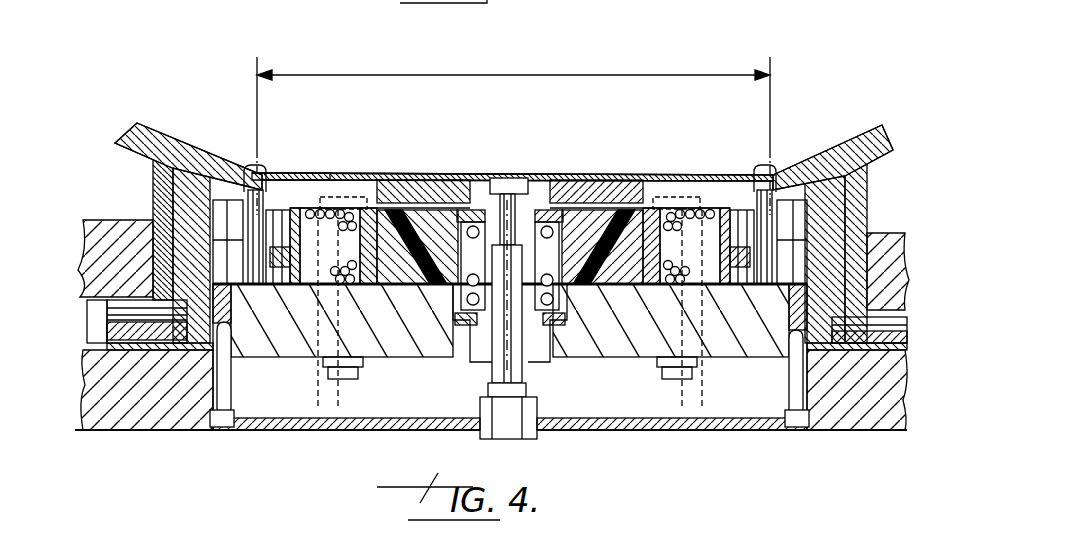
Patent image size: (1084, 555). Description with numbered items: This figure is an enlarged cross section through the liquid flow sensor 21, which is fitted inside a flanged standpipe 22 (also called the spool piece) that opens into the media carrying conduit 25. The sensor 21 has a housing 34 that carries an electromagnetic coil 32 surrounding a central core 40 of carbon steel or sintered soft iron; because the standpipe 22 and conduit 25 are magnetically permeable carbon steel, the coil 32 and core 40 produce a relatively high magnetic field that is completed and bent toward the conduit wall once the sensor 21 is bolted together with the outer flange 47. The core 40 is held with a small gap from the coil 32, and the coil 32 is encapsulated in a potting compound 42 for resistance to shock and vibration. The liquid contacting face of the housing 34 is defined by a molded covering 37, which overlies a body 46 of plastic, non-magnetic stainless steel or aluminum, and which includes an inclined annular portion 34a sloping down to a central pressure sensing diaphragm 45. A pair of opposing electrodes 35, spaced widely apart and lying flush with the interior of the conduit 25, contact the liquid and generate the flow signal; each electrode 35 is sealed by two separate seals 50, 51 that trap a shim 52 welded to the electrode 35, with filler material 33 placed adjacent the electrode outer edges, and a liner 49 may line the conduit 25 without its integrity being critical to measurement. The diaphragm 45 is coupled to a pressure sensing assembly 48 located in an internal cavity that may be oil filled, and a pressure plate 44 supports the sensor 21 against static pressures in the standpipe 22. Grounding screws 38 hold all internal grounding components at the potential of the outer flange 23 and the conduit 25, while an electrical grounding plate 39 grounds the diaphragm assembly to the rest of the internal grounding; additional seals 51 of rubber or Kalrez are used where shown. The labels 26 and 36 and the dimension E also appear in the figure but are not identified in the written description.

The liquid flow sensor 21 is at (748, 50).
The flanged standpipe 22 is at (152, 185).
The outer flange 23 is at (483, 323).
The conduit 25 is at (147, 150).
The bearing post 26 is at (728, 205).
The electromagnetic coil 32 is at (668, 182).
The filler material 33 is at (190, 147).
The housing 34 is at (652, 163).
The annular portion 34a is at (312, 172).
The electrode 35 is at (266, 170).
The bushing 36 is at (292, 196).
The molded covering 37 is at (628, 172).
The grounding screw 38 is at (190, 431).
The electrical grounding plate 39 is at (277, 286).
The core 40 is at (357, 330).
The potting compound 42 is at (428, 286).
The pressure plate 44 is at (720, 352).
The pressure sensing diaphragm 45 is at (443, 168).
The body 46 is at (400, 182).
The outer flange 47 is at (825, 430).
The pressure sensing assembly 48 is at (517, 330).
The liner 49 is at (163, 128).
The seal 50 is at (246, 170).
The seal 51 is at (240, 215).
The shim 52 is at (210, 203).
The dimension E is at (513, 130).